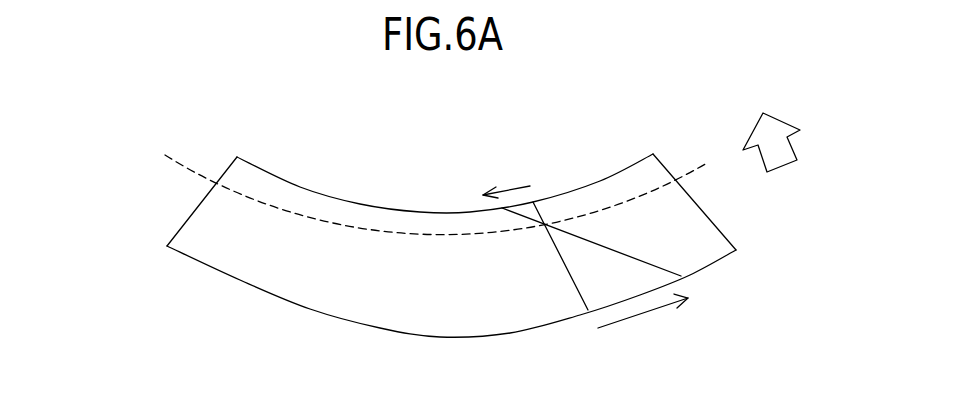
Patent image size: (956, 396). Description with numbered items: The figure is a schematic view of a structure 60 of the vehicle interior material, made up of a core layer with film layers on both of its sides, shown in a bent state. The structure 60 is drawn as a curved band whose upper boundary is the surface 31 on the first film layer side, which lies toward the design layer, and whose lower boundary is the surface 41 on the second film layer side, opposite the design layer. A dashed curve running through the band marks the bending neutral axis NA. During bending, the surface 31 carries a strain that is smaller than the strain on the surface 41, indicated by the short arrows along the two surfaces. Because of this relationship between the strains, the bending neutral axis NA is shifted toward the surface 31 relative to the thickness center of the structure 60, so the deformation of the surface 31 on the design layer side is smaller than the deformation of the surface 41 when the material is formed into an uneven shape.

The surface on the first film layer side 31 is at (292, 180).
The surface on the second film layer side 41 is at (206, 266).
The structure 60 is at (205, 218).
The bending neutral axis NA is at (690, 168).